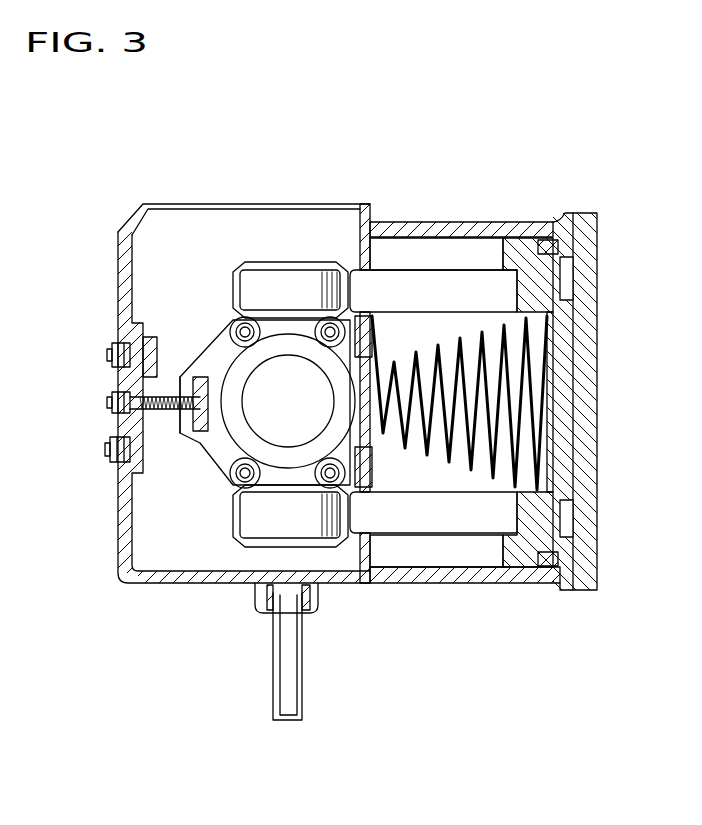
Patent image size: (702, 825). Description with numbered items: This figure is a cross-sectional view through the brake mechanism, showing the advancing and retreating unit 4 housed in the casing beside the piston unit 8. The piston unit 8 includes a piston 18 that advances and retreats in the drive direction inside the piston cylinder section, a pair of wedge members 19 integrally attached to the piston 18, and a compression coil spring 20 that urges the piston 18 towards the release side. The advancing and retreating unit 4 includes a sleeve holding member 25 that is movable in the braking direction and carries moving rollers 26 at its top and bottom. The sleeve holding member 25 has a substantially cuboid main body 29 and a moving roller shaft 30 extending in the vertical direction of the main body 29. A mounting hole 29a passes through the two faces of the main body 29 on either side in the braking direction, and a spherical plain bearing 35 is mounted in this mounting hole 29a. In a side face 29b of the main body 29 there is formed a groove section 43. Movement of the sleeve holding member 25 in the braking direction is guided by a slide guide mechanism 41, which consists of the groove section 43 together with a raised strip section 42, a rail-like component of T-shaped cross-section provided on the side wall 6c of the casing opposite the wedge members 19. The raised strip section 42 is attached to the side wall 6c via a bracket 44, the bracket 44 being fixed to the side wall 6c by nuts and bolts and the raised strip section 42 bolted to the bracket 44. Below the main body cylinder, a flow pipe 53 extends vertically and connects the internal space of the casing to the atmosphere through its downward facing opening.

The advancing and retreating unit 4 is at (213, 278).
The side wall 6c is at (124, 279).
The piston unit 8 is at (558, 232).
The piston 18 is at (535, 278).
The wedge members 19 is at (445, 288).
The compression coil spring 20 is at (453, 462).
The sleeve holding member 25 is at (237, 493).
The moving rollers 26 is at (315, 296).
The main body 29 is at (220, 447).
The mounting hole 29a is at (240, 366).
The side face 29b is at (198, 433).
The moving roller shaft 30 is at (288, 260).
The spherical plain bearing 35 is at (270, 342).
The slide guide mechanism 41 is at (160, 326).
The raised strip section 42 is at (185, 409).
The groove section 43 is at (207, 423).
The bracket 44 is at (130, 383).
The flow pipe 53 is at (302, 700).